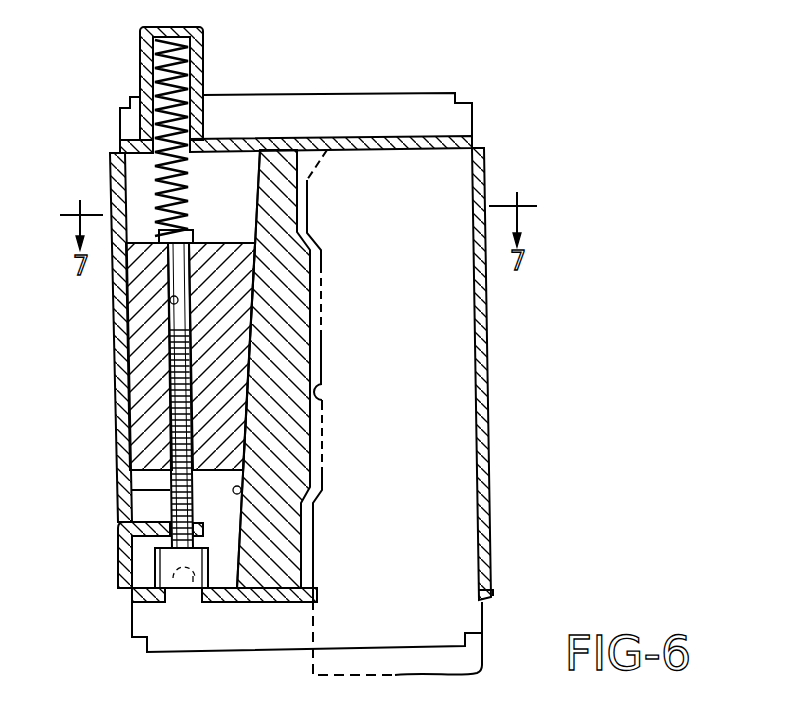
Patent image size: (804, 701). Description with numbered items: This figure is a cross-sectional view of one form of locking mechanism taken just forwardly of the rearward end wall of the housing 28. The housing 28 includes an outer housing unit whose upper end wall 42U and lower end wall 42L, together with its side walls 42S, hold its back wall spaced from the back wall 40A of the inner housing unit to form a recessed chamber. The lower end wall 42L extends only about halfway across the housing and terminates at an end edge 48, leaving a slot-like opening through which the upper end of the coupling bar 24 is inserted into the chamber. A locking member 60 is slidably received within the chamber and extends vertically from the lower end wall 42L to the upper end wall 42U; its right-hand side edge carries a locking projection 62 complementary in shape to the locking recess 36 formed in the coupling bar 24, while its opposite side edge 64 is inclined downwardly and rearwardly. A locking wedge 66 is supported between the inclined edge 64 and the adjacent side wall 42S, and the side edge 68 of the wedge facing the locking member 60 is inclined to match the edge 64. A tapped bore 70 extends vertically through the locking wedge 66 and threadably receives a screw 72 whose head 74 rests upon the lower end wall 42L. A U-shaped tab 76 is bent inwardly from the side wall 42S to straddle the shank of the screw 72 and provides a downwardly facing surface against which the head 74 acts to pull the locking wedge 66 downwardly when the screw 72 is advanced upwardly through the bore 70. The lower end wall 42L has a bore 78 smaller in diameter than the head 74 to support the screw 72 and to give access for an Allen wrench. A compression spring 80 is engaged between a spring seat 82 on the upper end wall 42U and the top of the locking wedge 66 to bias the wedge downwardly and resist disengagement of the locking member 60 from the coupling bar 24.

The spring seat 82 is at (142, 50).
The compression spring 80 is at (187, 72).
The upper end wall 42U is at (368, 136).
The housing 28 is at (92, 168).
The side edge of locking wedge 68 is at (259, 268).
The back wall of inner housing unit 40A is at (406, 271).
The locking projection 62 is at (322, 337).
The side wall of outer housing 42S is at (490, 338).
The tapped bore 70 is at (170, 300).
The locking wedge 66 is at (140, 363).
The locking recess 36 is at (330, 398).
The inclined side edge of locking member 64 is at (242, 490).
The screw 72 is at (130, 490).
The locking member 60 is at (293, 527).
The U-shaped tab 76 is at (128, 521).
The coupling bar 24 is at (475, 658).
The screw head 74 is at (155, 572).
The end edge 48 is at (318, 593).
The bore 78 is at (178, 603).
The lower end wall 42L is at (250, 603).